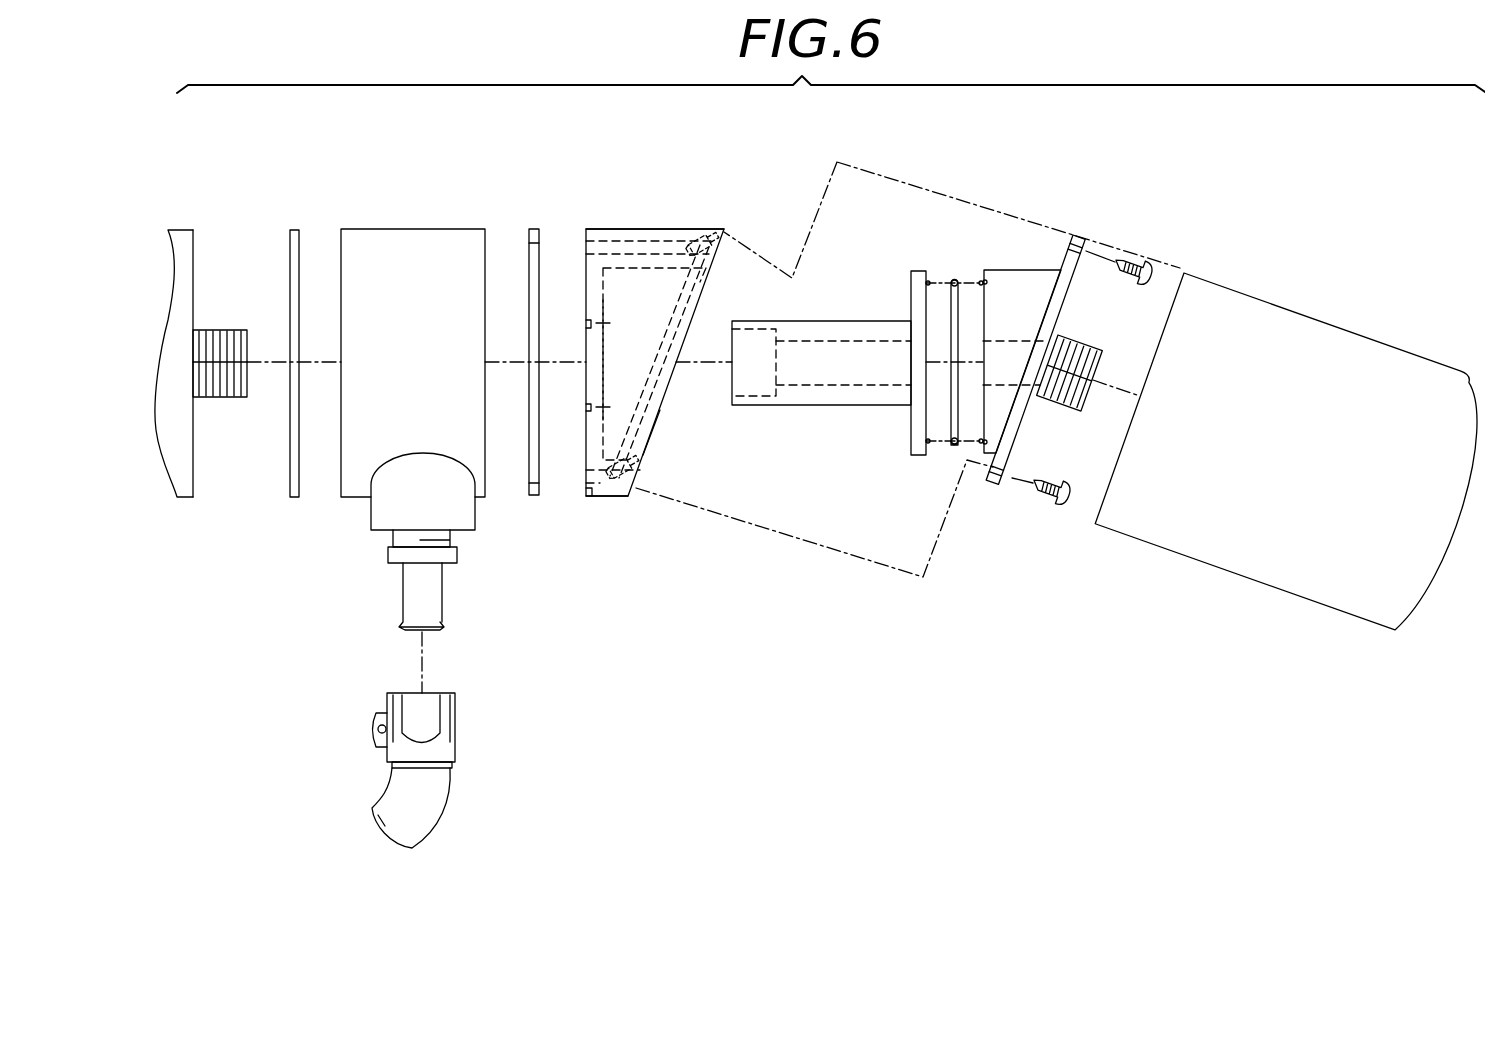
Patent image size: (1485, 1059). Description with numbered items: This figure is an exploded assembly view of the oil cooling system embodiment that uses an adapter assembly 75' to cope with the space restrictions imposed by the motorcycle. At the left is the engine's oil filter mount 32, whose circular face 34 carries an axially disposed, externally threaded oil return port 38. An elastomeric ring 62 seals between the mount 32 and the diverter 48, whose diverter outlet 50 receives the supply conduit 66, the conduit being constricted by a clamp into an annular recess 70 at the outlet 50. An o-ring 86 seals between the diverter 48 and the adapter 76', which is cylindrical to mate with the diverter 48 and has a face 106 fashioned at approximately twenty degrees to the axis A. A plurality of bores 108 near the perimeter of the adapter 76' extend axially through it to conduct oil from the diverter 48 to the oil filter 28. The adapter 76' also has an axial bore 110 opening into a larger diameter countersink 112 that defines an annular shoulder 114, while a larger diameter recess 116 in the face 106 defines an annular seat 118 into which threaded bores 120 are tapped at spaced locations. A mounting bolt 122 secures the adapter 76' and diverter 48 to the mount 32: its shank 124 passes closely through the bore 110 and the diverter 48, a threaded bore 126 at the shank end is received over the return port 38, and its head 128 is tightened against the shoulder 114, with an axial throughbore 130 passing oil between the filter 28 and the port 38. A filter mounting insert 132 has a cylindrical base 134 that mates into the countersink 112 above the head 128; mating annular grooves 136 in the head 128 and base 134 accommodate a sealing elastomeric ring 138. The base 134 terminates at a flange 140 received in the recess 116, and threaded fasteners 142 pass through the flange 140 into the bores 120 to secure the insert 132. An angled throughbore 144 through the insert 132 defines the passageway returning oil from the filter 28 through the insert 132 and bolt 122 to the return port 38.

The oil filter 28 is at (1345, 473).
The oil filter mount 32 is at (183, 235).
The circular face 34 is at (193, 262).
The oil return port 38 is at (218, 398).
The diverter 48 is at (440, 356).
The diverter outlet 50 is at (450, 508).
The elastomeric ring 62 is at (300, 246).
The supply conduit 66 is at (440, 820).
The annular recess 70 is at (442, 602).
The adapter assembly 75' is at (954, 438).
The adapter 76' is at (667, 368).
The o-ring 86 is at (539, 493).
The face 106 is at (643, 452).
The bores 108 is at (648, 245).
The axial bore 110 is at (588, 326).
The axial countersink 112 is at (660, 274).
The annular shoulder 114 is at (602, 427).
The recess 116 is at (640, 478).
The annular seat 118 is at (630, 496).
The threaded bores 120 is at (702, 242).
The mounting bolt 122 is at (873, 228).
The shank 124 is at (829, 406).
The threaded bore 126 is at (752, 328).
The head 128 is at (911, 292).
The axial throughbore 130 is at (868, 372).
The filter mounting insert 132 is at (1095, 217).
The cylindrical base 134 is at (1027, 270).
The annular grooves 136 is at (985, 283).
The elastomeric ring 138 is at (956, 447).
The flange 140 is at (1077, 238).
The threaded fasteners 142 is at (1150, 271).
The angled throughbore 144 is at (987, 342).
The axis A is at (508, 363).